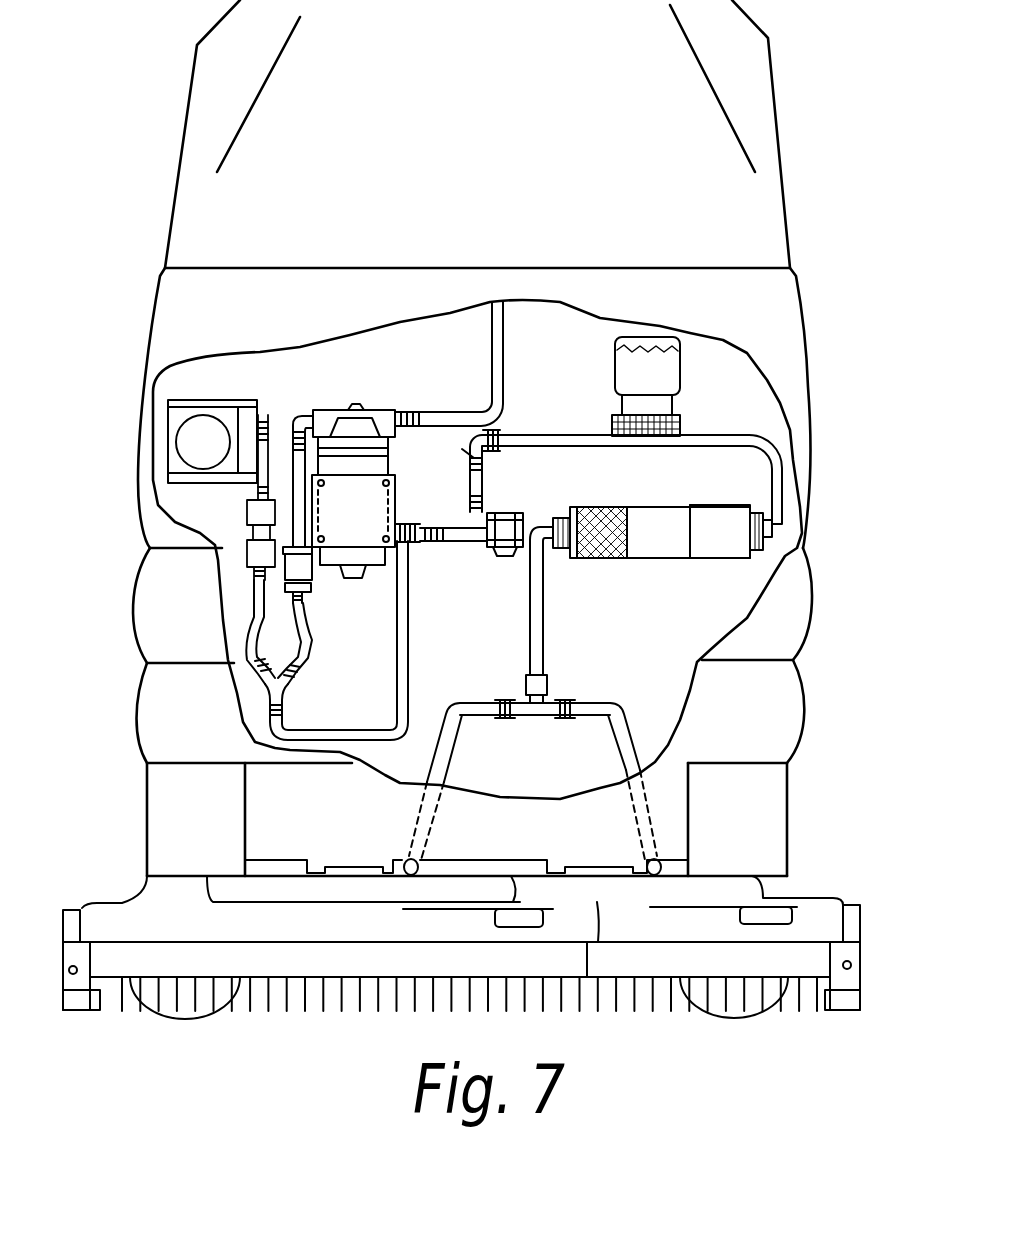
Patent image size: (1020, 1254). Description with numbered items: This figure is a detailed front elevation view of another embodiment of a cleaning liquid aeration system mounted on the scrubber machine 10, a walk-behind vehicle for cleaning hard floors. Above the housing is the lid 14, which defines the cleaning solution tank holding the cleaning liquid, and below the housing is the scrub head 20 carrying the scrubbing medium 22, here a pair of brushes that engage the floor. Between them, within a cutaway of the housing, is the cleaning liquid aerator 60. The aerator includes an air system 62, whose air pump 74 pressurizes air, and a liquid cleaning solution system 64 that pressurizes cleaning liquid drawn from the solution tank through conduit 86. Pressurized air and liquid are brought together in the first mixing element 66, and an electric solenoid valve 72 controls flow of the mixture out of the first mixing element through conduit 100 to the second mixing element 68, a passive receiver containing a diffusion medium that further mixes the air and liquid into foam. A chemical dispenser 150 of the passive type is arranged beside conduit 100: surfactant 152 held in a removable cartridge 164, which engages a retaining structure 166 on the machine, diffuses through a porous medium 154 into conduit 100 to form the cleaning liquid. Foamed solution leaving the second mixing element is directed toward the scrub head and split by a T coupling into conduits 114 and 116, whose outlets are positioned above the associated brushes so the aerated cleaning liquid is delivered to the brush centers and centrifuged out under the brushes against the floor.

The scrubber machine 10 is at (858, 238).
The lid 14 is at (777, 82).
The scrub head 20 is at (830, 878).
The scrubbing medium 22 is at (807, 998).
The cleaning liquid aerator 60 is at (455, 368).
The air system 62 is at (229, 384).
The liquid cleaning solution system 64 is at (378, 386).
The first mixing element 66 is at (283, 686).
The second mixing element 68 is at (652, 583).
The electric solenoid valve 72 is at (503, 506).
The air pump 74 is at (262, 406).
The conduit 86 is at (507, 362).
The conduit 100 is at (762, 433).
The conduit 114 is at (457, 700).
The conduit 116 is at (603, 706).
The chemical dispenser 150 is at (648, 386).
The surfactant 152 is at (683, 379).
The porous medium 154 is at (680, 423).
The removable cartridge 164 is at (682, 351).
The retaining structure 166 is at (620, 406).